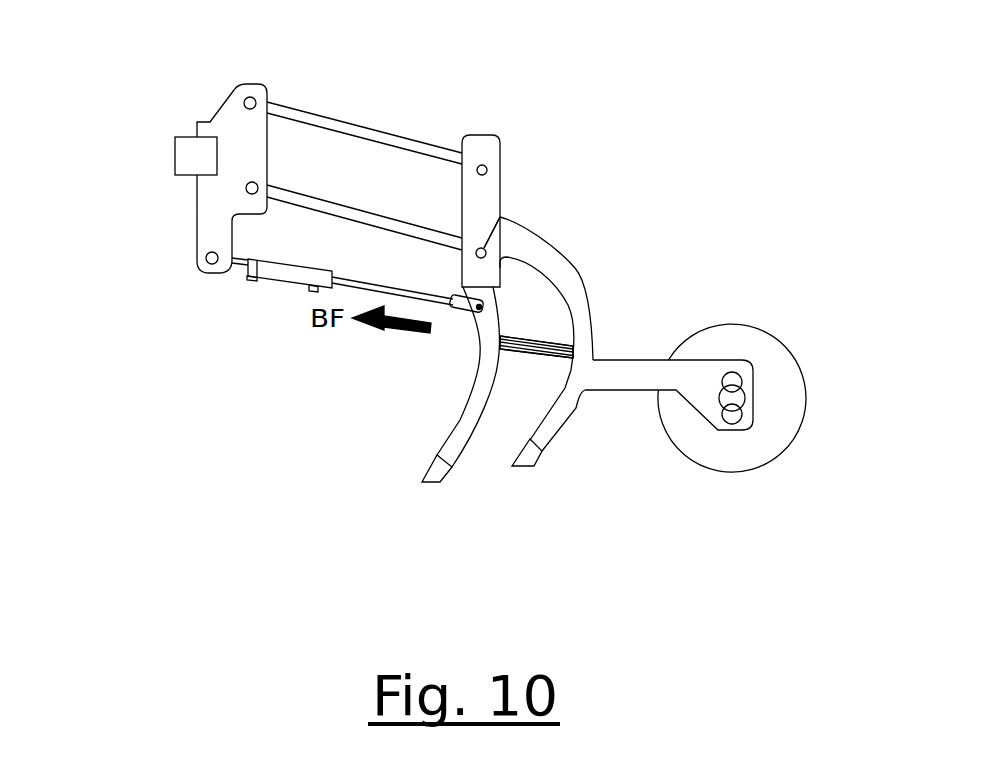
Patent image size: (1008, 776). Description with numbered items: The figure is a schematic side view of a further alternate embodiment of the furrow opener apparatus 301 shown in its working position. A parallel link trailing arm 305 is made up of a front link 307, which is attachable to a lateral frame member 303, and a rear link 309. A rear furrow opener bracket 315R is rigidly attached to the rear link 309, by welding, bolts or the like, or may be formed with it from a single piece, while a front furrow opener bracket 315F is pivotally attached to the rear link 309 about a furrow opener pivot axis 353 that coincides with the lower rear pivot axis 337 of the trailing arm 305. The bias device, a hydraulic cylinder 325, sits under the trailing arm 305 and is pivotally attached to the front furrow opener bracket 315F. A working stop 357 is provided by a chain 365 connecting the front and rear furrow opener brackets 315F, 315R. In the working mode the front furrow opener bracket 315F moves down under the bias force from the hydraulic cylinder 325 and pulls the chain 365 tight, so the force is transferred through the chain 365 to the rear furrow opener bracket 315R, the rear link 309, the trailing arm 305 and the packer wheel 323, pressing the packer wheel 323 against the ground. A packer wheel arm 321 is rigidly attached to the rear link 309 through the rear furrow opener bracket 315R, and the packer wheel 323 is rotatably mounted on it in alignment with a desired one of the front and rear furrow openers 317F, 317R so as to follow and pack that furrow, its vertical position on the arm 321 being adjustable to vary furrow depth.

The furrow opener apparatus 301 is at (678, 102).
The lateral frame member 303 is at (175, 146).
The parallel link trailing arm 305 is at (387, 103).
The front link 307 is at (255, 87).
The rear link 309 is at (500, 172).
The front furrow opener bracket 315F is at (470, 313).
The rear furrow opener bracket 315R is at (587, 290).
The front furrow opener 317F is at (423, 476).
The rear furrow opener 317R is at (520, 467).
The packer wheel arm 321 is at (630, 360).
The packer wheel 323 is at (773, 337).
The hydraulic cylinder 325 is at (278, 280).
The lower rear pivot axis 337 is at (573, 208).
The furrow opener pivot axis 353 is at (500, 217).
The working stop 357 is at (530, 352).
The chain 365 is at (505, 462).